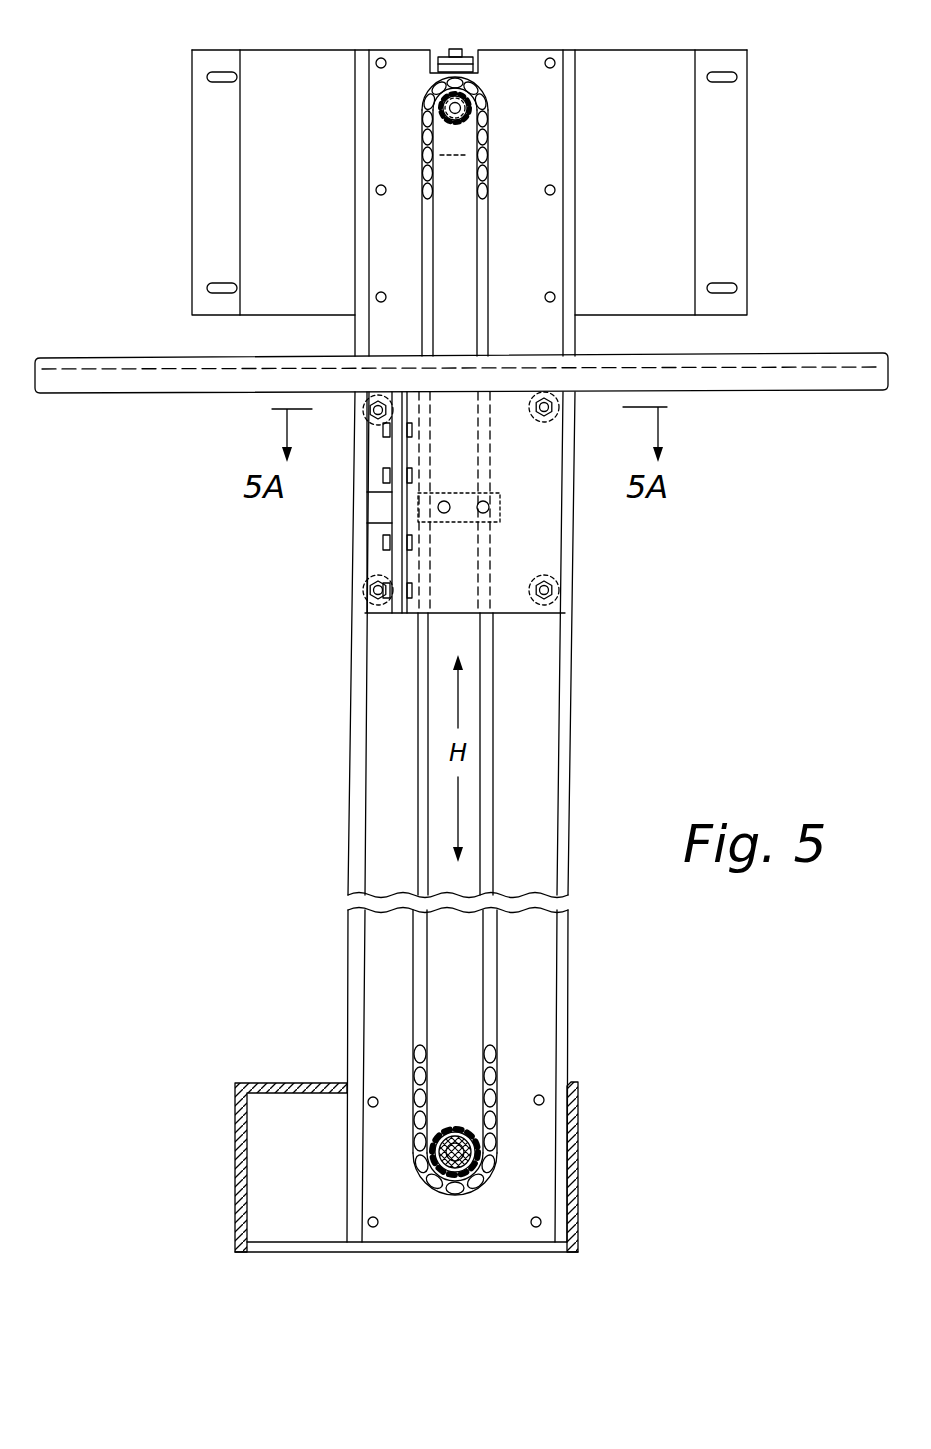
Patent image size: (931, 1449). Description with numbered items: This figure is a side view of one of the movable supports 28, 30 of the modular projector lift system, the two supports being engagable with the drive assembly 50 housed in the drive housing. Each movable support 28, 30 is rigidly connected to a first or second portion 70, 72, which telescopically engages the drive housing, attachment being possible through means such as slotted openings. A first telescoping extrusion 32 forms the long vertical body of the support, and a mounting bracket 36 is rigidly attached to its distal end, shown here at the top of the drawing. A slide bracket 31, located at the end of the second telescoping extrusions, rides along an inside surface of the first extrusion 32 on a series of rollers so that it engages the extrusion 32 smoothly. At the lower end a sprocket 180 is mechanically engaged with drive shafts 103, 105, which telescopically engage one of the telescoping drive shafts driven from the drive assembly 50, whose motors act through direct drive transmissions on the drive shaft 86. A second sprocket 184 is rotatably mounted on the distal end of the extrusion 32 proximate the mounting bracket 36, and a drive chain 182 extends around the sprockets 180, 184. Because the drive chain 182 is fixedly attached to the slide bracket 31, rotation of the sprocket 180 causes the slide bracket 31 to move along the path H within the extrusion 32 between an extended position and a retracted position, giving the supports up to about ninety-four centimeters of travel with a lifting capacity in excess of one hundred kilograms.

The movable support 28 is at (469, 645).
The movable support 30 is at (586, 707).
The slide bracket 31 is at (843, 372).
The first telescoping extrusion 32 is at (572, 632).
The mounting bracket 36 is at (740, 150).
The drive assembly 50 is at (283, 1247).
The first portion 70 is at (378, 1147).
The second portion 72 is at (235, 1100).
The drive shaft 86 is at (495, 513).
The drive shaft 103 is at (573, 1144).
The drive shaft 105 is at (465, 1157).
The sprocket 180 is at (470, 1118).
The drive chain 182 is at (418, 728).
The sprocket 184 is at (467, 100).